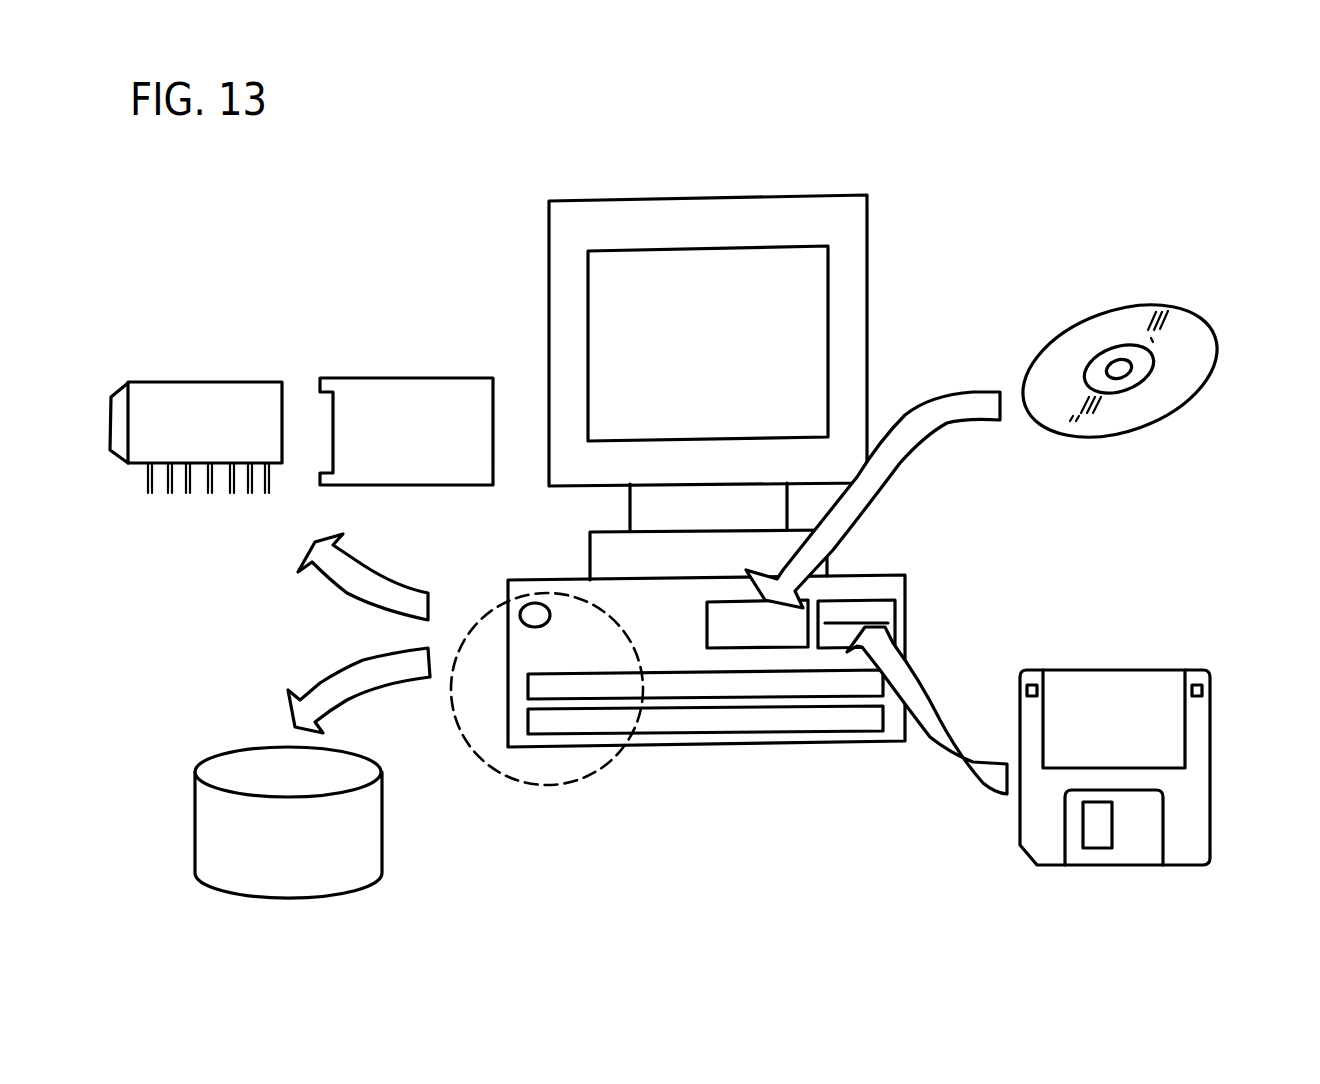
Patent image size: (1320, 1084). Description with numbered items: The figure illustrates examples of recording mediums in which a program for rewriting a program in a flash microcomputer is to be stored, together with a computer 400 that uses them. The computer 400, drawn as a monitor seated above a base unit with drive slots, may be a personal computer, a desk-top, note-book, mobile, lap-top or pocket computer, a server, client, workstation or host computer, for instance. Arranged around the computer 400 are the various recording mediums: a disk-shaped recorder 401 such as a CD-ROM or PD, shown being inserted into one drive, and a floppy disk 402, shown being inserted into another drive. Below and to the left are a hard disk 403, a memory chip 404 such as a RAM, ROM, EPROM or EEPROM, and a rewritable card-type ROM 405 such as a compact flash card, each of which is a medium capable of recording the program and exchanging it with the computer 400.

The computer 400 is at (867, 237).
The disk-shaped recorder 401 is at (1208, 318).
The floppy disk 402 is at (1211, 694).
The hard disk 403 is at (195, 840).
The memory chip 404 is at (160, 381).
The rewritable card-type ROM 405 is at (365, 375).